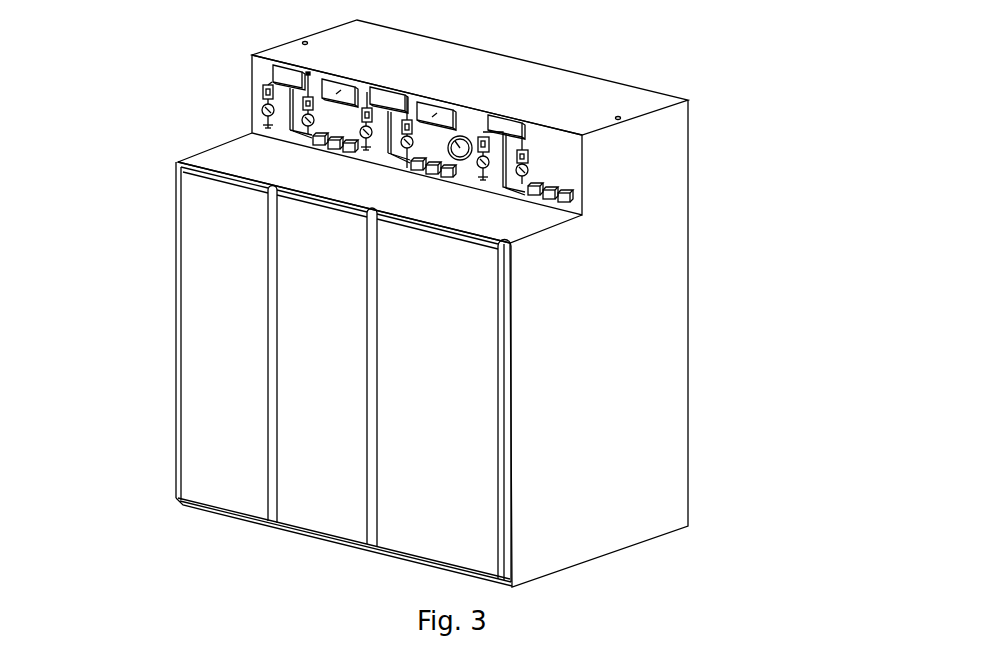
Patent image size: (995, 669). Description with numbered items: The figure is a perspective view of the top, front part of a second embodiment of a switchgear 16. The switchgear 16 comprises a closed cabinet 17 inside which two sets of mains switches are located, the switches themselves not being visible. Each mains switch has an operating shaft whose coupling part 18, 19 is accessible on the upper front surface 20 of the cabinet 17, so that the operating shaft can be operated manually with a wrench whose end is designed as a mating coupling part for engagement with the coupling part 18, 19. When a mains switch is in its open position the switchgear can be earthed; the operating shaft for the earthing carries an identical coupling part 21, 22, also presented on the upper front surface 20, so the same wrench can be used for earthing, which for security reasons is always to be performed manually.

The switchgear 16 is at (112, 224).
The closed cabinet 17 is at (673, 453).
The coupling part 18 is at (303, 118).
The coupling part 19 is at (411, 138).
The upper front surface 20 is at (260, 71).
The coupling part 21 is at (262, 110).
The coupling part 22 is at (370, 127).